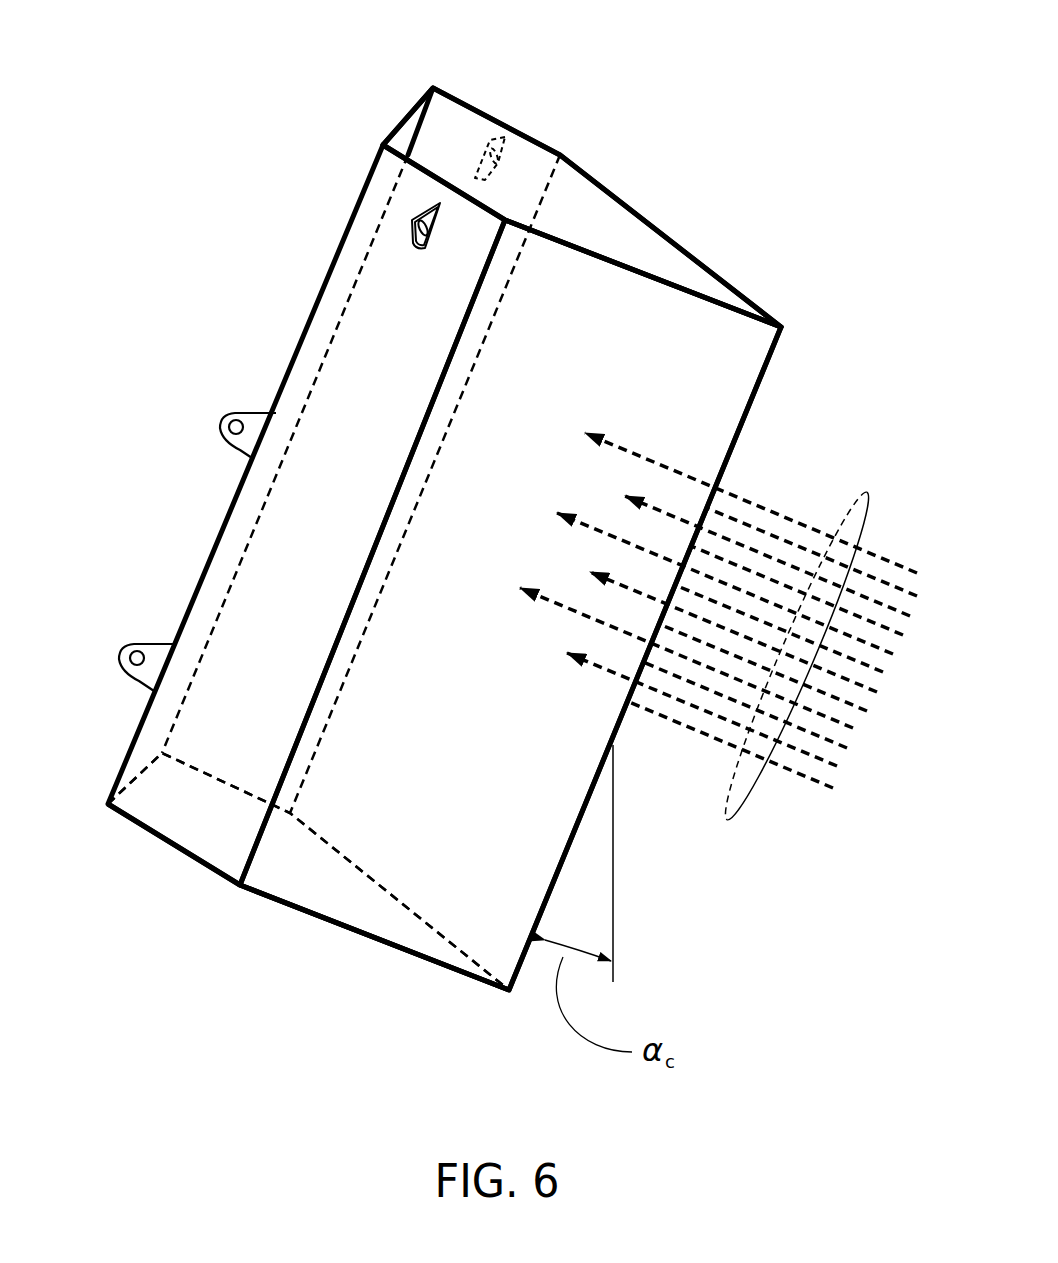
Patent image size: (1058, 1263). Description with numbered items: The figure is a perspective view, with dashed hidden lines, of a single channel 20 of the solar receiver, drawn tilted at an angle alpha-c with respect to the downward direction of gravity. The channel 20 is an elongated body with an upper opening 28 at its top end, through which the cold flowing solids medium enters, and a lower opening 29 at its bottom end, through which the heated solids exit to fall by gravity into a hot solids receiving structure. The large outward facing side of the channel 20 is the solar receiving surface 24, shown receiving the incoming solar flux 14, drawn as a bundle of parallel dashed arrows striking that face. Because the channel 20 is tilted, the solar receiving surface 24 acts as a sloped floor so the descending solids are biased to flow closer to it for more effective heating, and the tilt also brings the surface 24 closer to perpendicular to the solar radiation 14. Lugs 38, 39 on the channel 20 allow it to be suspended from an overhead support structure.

The solar flux 14 is at (727, 820).
The channel 20 is at (267, 575).
The solar receiving surface 24 is at (678, 332).
The upper opening 28 is at (588, 218).
The lower opening 29 is at (327, 888).
The lug 38 is at (411, 218).
The lug 39 is at (230, 412).